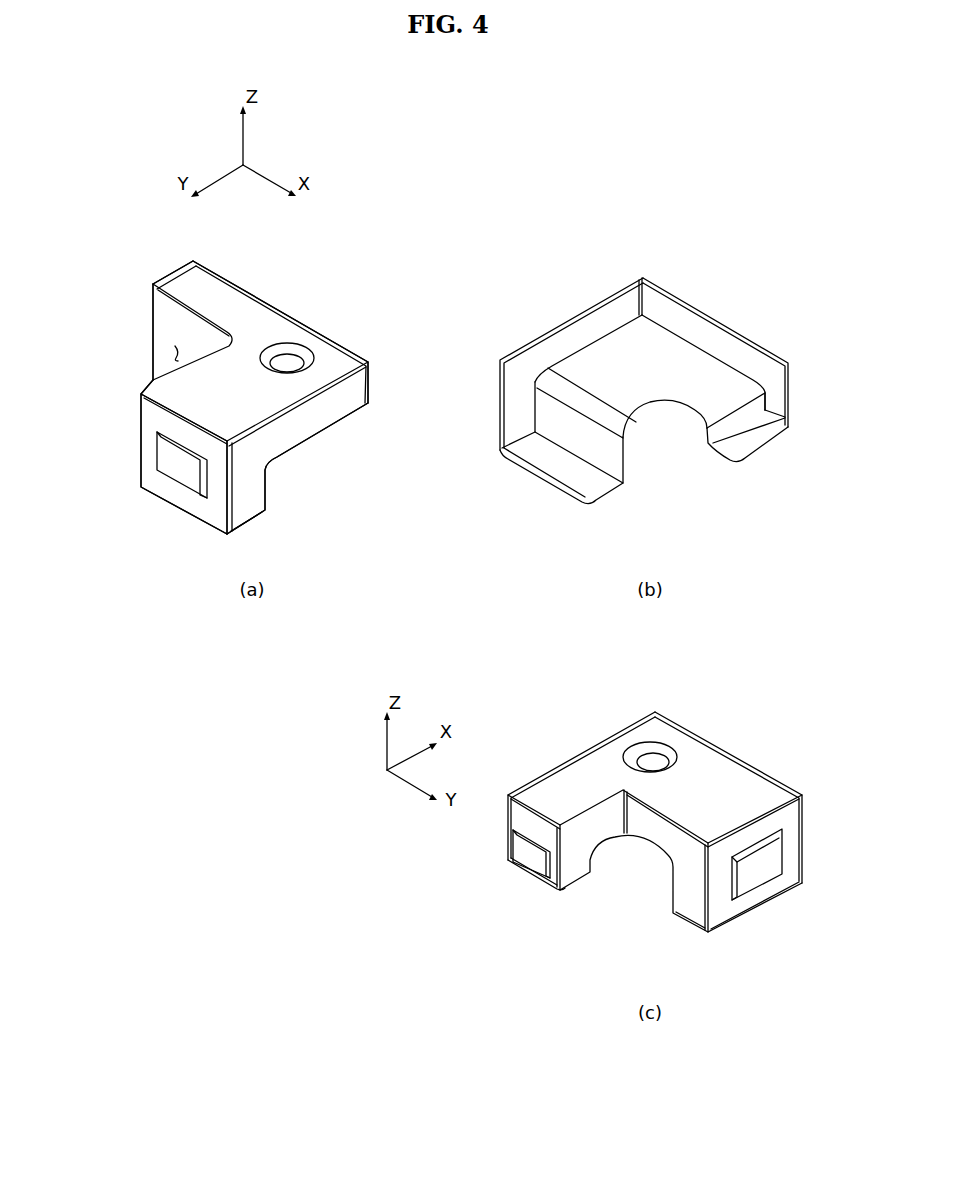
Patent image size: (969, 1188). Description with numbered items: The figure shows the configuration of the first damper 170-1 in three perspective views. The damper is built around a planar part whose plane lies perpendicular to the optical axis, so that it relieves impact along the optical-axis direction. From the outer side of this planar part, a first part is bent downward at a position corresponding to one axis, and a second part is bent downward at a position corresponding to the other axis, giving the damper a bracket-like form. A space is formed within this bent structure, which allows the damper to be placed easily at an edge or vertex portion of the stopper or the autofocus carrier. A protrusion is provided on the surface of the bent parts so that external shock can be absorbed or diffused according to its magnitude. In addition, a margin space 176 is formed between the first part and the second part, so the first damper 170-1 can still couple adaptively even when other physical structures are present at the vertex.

The first damper 170-1 is at (389, 267).
The margin space 176 is at (177, 355).